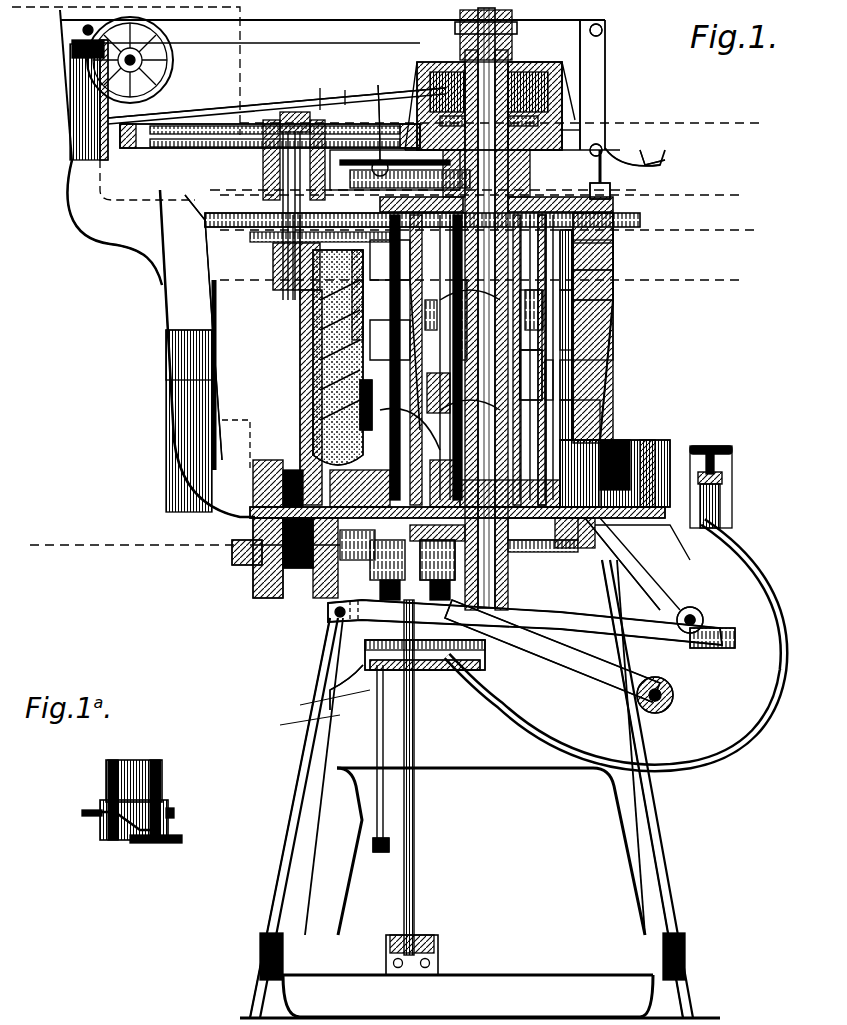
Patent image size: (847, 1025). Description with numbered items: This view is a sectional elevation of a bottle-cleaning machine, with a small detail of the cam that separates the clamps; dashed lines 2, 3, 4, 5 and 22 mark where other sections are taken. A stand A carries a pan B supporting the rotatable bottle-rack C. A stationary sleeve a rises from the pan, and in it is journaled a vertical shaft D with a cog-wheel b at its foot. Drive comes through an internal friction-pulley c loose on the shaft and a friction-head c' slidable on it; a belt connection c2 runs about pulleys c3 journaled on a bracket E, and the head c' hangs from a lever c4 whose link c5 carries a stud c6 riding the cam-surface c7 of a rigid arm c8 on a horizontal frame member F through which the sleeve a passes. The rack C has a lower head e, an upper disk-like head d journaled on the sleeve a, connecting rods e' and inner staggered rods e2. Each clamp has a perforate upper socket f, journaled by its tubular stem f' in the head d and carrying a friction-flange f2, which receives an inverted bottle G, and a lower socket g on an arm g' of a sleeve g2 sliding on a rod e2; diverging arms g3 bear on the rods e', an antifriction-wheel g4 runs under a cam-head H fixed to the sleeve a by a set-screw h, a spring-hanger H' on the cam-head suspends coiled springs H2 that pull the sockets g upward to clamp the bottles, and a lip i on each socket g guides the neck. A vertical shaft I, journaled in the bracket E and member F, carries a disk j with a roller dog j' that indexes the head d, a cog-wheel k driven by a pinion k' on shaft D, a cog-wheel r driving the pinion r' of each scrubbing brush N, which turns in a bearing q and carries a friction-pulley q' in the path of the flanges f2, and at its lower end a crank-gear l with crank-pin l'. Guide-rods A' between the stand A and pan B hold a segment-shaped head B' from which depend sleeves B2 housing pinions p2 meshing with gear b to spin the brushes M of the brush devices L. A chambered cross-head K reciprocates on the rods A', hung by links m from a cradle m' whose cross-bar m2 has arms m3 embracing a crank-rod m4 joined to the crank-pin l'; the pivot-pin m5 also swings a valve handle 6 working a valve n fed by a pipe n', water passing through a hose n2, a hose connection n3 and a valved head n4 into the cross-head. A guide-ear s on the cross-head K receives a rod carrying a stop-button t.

In FIG. 1, the section line 2 is at (762, 88).
In FIG. 1, the section line 3 is at (741, 160).
In FIG. 1, the section line 4 is at (762, 195).
In FIG. 1, the section line 5 is at (741, 240).
In FIG. 1, the section line 22 is at (78, 495).
In FIG. 1, the pulleys c3 is at (163, 60).
In FIG. 1, the vertical shaft I is at (250, 48).
In FIG. 1, the lever c4 is at (318, 100).
In FIG. 1, the belt connection c2 is at (345, 110).
In FIG. 1, the pipe n' is at (377, 100).
In FIG. 1, the internal friction-pulley c is at (473, 105).
In FIG. 1, the friction-head c' is at (542, 91).
In FIG. 1, the link c5 is at (602, 34).
In FIG. 1, the pinion k' is at (526, 450).
In FIG. 1, the horizontal frame member F is at (560, 120).
In FIG. 1, the stud c6 is at (575, 135).
In FIG. 1, the cam-surface c7 is at (605, 145).
In FIG. 1, the rigid arm c8 is at (615, 162).
In FIG. 1, the upper disk-like head d is at (620, 178).
In FIG. 1, the tubular stem f' is at (640, 176).
In FIG. 1, the circumferential friction-flange f2 is at (613, 220).
In FIG. 1, the guide-rods e2 is at (595, 240).
In FIG. 1, the perforate upper socket f is at (465, 259).
In FIG. 1, the spring-hanger H' is at (624, 260).
In FIG. 1, the bottle G is at (613, 290).
In FIG. 1, the cog-wheel k is at (276, 98).
In FIG. 1, the disk j is at (270, 155).
In FIG. 1, the dog j' is at (160, 130).
In FIG. 1, the cog-wheel r is at (176, 299).
In FIG. 1, the grooved friction-pulley q' is at (181, 315).
In FIG. 1, the bracket E is at (110, 230).
In FIG. 1, the bearing q is at (222, 327).
In FIG. 1, the pinion r' is at (266, 257).
In FIG. 1, the surface-scrubbing brushes N is at (212, 370).
In FIG. 1, the brush M is at (300, 360).
In FIG. 1, the brush devices L is at (222, 436).
In FIG. 1, the lower annular socket g is at (281, 427).
In FIG. 1, the coiled springs H2 is at (372, 380).
In FIG. 1, the stationary sleeve a is at (365, 440).
In FIG. 1, the rotatable bottle-rack C is at (613, 320).
In FIG. 1, the vertical shaft D is at (545, 300).
In FIG. 1, the set-screw h is at (545, 340).
In FIG. 1a, the set-screw h is at (174, 812).
In FIG. 1, the cam-head H is at (646, 360).
In FIG. 1a, the cam-head H is at (161, 797).
In FIG. 1, the antifriction-wheel g4 is at (555, 370).
In FIG. 1, the diverging arms g3 is at (575, 380).
In FIG. 1, the lip i is at (605, 400).
In FIG. 1, the arm g' is at (603, 420).
In FIG. 1, the sleeve g2 is at (600, 435).
In FIG. 1, the pan B is at (656, 458).
In FIG. 1, the lower head e is at (580, 473).
In FIG. 1, the vertical rods e' is at (335, 206).
In FIG. 1, the segment-shaped head B' is at (412, 524).
In FIG. 1, the cog-wheel l is at (213, 563).
In FIG. 1, the crank-pin l' is at (292, 573).
In FIG. 1, the pinion p2 is at (258, 595).
In FIG. 1, the cog-wheel b is at (630, 560).
In FIG. 1, the short sleeve B2 is at (455, 590).
In FIG. 1, the links m is at (525, 622).
In FIG. 1, the valved head n4 is at (720, 500).
In FIG. 1, the valve n is at (743, 585).
In FIG. 1, the valve handle 6 is at (700, 612).
In FIG. 1, the cradle m' is at (630, 627).
In FIG. 1, the pivot-pin m5 is at (695, 635).
In FIG. 1, the arms m3 is at (672, 695).
In FIG. 1, the cross-bar m2 is at (660, 712).
In FIG. 1, the hose connection n3 is at (735, 730).
In FIG. 1, the hose n2 is at (720, 748).
In FIG. 1, the crank-rod m4 is at (440, 670).
In FIG. 1, the cross-head K is at (370, 690).
In FIG. 1, the guide-ear s is at (345, 712).
In FIG. 1, the stand A is at (474, 789).
In FIG. 1, the guide-rods A' is at (465, 794).
In FIG. 1, the stop-button t is at (378, 852).